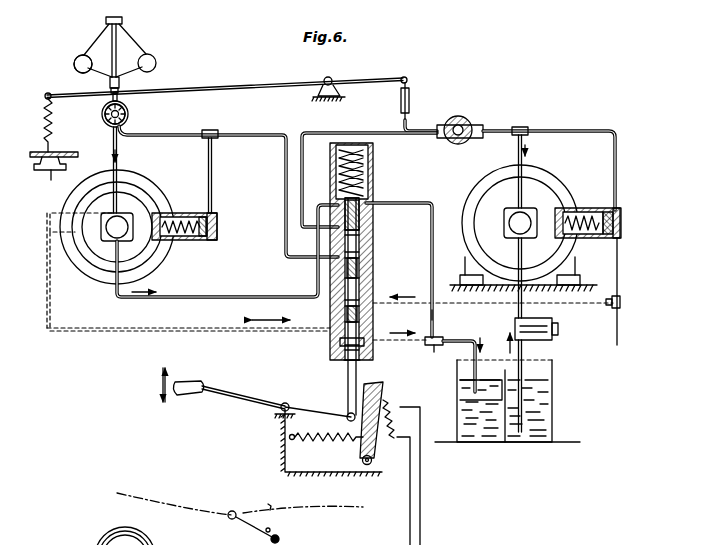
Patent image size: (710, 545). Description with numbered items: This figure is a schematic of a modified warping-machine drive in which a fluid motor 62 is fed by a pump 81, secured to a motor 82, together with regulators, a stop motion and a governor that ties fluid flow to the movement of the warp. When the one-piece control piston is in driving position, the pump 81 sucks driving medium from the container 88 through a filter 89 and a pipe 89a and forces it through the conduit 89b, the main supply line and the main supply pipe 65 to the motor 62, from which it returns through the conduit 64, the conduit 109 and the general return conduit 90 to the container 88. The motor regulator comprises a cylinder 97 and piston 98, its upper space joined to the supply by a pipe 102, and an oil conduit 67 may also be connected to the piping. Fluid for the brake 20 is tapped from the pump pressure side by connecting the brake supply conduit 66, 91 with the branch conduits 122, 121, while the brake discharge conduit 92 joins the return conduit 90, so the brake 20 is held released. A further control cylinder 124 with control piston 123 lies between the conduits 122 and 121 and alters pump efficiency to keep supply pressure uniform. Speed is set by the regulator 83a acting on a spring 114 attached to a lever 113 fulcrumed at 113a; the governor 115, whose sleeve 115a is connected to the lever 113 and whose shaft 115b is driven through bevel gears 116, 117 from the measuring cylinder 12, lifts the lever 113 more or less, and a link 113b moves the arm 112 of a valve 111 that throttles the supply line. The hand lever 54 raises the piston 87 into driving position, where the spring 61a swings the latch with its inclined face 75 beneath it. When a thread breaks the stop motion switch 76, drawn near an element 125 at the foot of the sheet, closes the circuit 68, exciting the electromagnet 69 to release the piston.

The governor 115 is at (120, 36).
The shaft 115b is at (112, 43).
The sleeve 115a is at (120, 89).
The lever 113 is at (232, 85).
The fulcrum 113a is at (342, 85).
The link 113b is at (410, 96).
The arm 112 is at (413, 126).
The spring 114 is at (53, 128).
The regulator 83a is at (60, 162).
The measuring cylinder 12 is at (107, 124).
The bevel gear 116 is at (125, 104).
The bevel gear 117 is at (130, 119).
The main supply pipe 65 is at (254, 135).
The pipe 102 is at (211, 147).
The motor 62 is at (97, 247).
The brake 20 is at (105, 272).
The cylinder 97 is at (173, 215).
The piston 98 is at (190, 242).
The oil conduit 67 is at (58, 212).
The conduit 64 is at (192, 294).
The brake supply conduit 66 is at (147, 327).
The conduit 109 is at (430, 229).
The brake discharge conduit 92 is at (398, 341).
The general return conduit 90 is at (462, 350).
The piston 87 is at (346, 378).
The hand lever 54 is at (234, 393).
The electromagnet 69 is at (373, 460).
The spring 61a is at (337, 447).
The inclined face 75 is at (391, 402).
The circuit 68 is at (422, 500).
The valve 111 is at (468, 115).
The branch conduit 121 is at (578, 128).
The conduit 89b is at (517, 151).
The pump 81 is at (528, 190).
The motor 82 is at (561, 195).
The control piston 123 is at (596, 212).
The control cylinder 124 is at (621, 218).
The branch conduit 122 is at (619, 271).
The pipe 89a is at (522, 317).
The brake supply conduit 91 is at (463, 300).
The filter 89 is at (556, 341).
The container 88 is at (548, 365).
The wheel 125 is at (156, 540).
The stop motion switch 76 is at (248, 521).